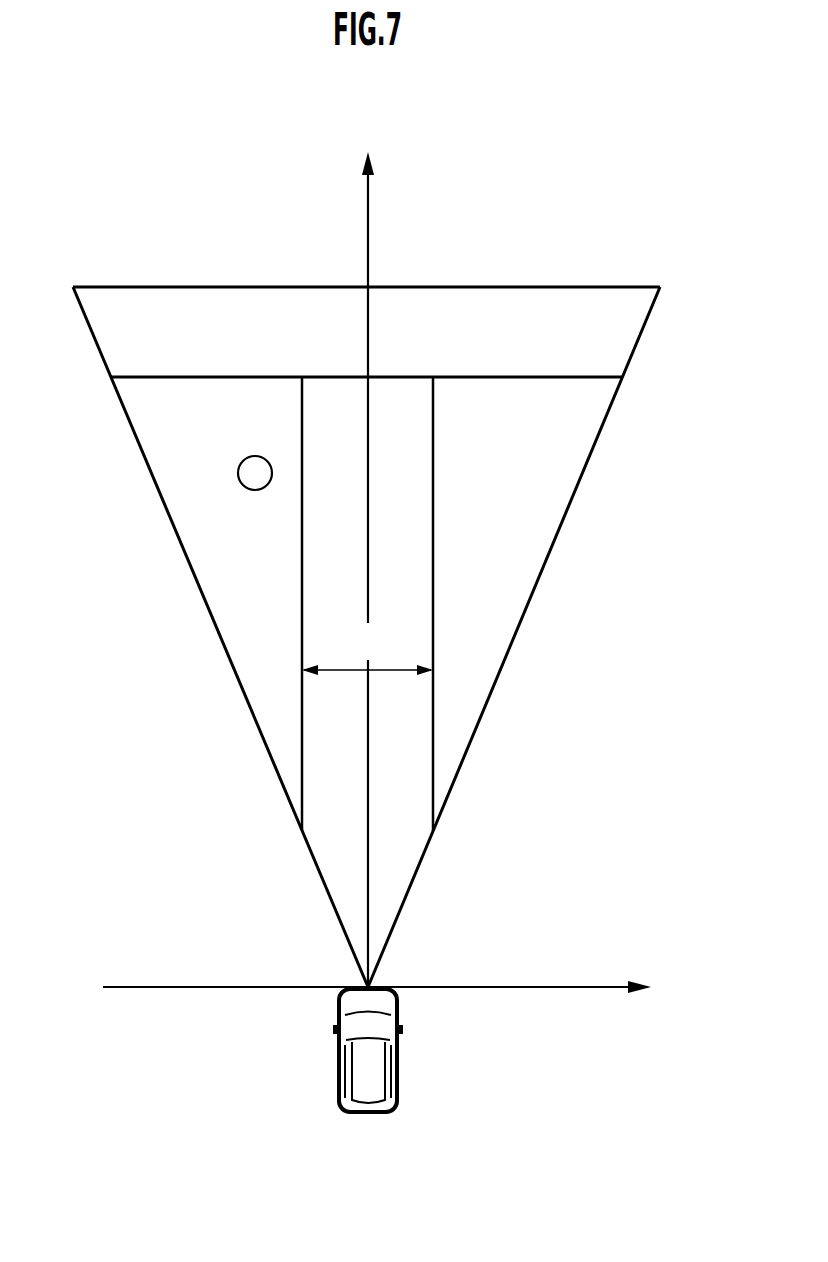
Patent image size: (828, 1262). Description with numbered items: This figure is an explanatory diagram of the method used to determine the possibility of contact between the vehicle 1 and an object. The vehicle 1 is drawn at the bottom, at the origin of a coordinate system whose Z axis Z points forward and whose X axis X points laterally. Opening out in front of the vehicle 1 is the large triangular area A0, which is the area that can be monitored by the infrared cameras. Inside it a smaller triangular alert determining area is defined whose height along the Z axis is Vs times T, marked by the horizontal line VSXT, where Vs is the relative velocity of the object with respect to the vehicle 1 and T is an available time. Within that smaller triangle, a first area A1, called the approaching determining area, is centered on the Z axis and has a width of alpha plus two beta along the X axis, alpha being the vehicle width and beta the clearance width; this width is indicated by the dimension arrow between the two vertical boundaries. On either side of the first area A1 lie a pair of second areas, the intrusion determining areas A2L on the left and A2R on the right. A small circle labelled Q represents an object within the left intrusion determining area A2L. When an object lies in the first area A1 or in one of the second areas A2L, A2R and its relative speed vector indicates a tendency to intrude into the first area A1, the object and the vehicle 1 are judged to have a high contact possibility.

The vehicle 1 is at (393, 1103).
The triangular area A0 is at (598, 280).
The first area (approaching determining area) A1 is at (403, 878).
The second area (intrusion determining area) A2L is at (227, 594).
The second area (intrusion determining area) A2R is at (507, 617).
The height Vs times T VSXT is at (370, 377).
The object Q is at (243, 458).
The Z axis Z is at (364, 548).
The X axis X is at (391, 993).